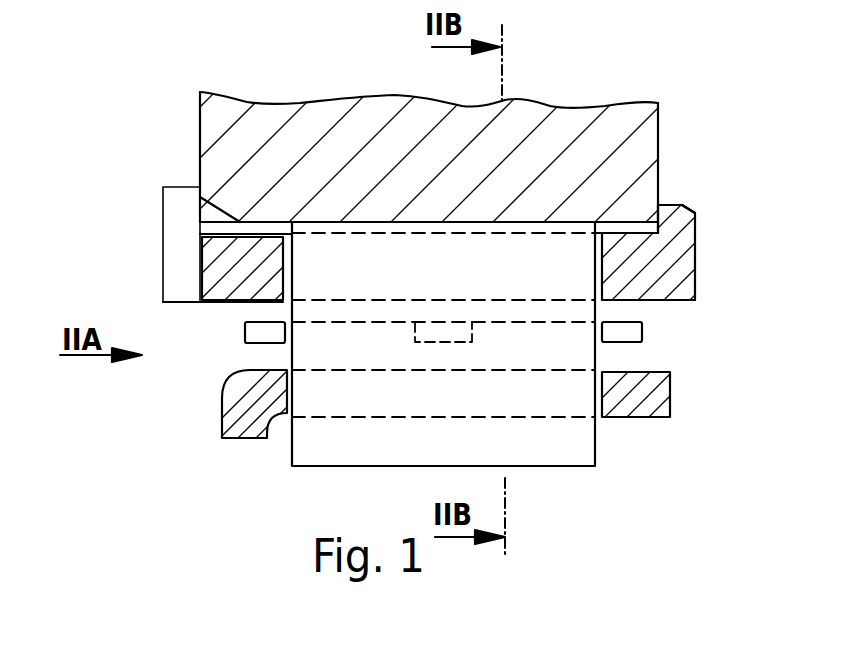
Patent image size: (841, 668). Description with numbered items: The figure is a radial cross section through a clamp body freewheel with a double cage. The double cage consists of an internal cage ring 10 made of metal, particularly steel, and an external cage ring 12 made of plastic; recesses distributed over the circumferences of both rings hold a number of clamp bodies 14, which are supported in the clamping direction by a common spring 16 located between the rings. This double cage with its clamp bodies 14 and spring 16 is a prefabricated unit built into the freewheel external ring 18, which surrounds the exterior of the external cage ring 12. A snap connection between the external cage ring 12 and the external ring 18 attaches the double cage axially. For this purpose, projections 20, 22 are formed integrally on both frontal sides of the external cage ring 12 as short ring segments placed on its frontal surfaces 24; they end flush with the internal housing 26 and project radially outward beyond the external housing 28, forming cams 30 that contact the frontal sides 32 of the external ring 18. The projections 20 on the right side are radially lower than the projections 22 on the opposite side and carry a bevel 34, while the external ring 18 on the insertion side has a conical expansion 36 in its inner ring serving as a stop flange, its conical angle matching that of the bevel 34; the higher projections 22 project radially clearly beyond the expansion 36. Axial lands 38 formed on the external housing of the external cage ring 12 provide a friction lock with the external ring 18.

The internal cage ring 10 is at (647, 392).
The external cage ring 12 is at (695, 299).
The clamp bodies 14 is at (550, 450).
The spring 16 is at (640, 333).
The freewheel external ring 18 is at (327, 124).
The projections 20 is at (687, 263).
The projections 22 is at (175, 283).
The frontal surfaces 24 is at (202, 258).
The internal housing 26 is at (193, 303).
The external housing 28 is at (275, 222).
The cams 30 is at (172, 198).
The frontal sides 32 is at (197, 128).
The bevel 34 is at (690, 205).
The conical expansion 36 is at (236, 206).
The axial lands 38 is at (622, 227).